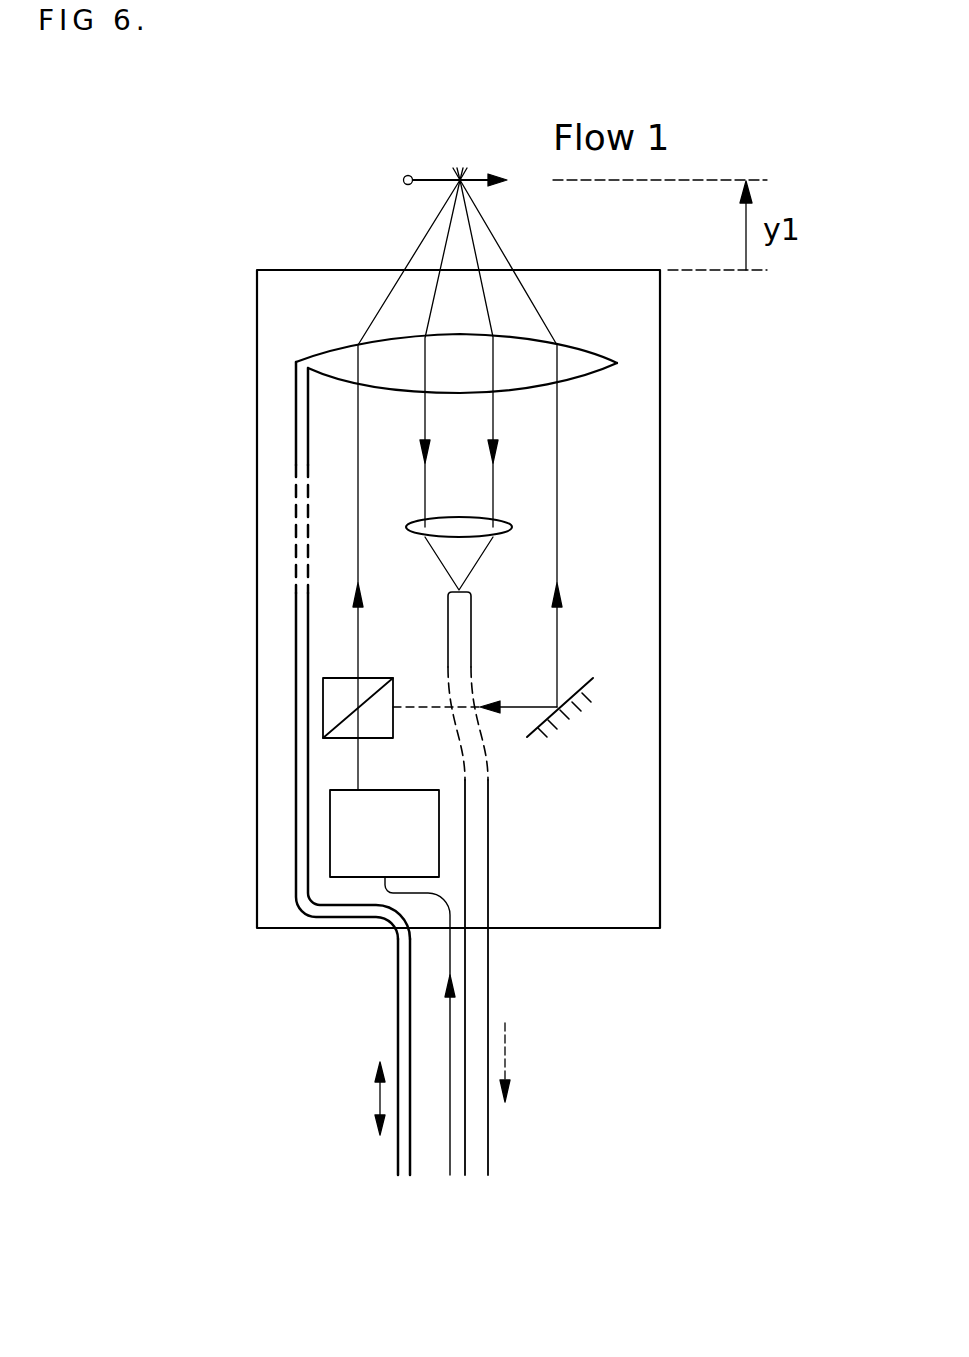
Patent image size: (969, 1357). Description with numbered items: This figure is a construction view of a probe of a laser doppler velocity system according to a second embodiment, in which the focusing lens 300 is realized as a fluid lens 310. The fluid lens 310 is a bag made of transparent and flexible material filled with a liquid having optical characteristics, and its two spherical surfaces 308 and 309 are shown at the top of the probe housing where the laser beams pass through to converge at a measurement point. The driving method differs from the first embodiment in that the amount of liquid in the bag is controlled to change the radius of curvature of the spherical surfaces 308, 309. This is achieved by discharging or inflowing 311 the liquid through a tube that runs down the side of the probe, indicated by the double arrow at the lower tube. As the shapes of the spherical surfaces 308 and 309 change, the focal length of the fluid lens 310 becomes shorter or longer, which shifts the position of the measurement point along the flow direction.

The focusing lens 300 is at (660, 560).
The spherical surface 308 is at (583, 370).
The spherical surface 309 is at (400, 389).
The fluid lens 310 is at (617, 363).
The discharging or inflowing of liquid 311 is at (398, 1152).